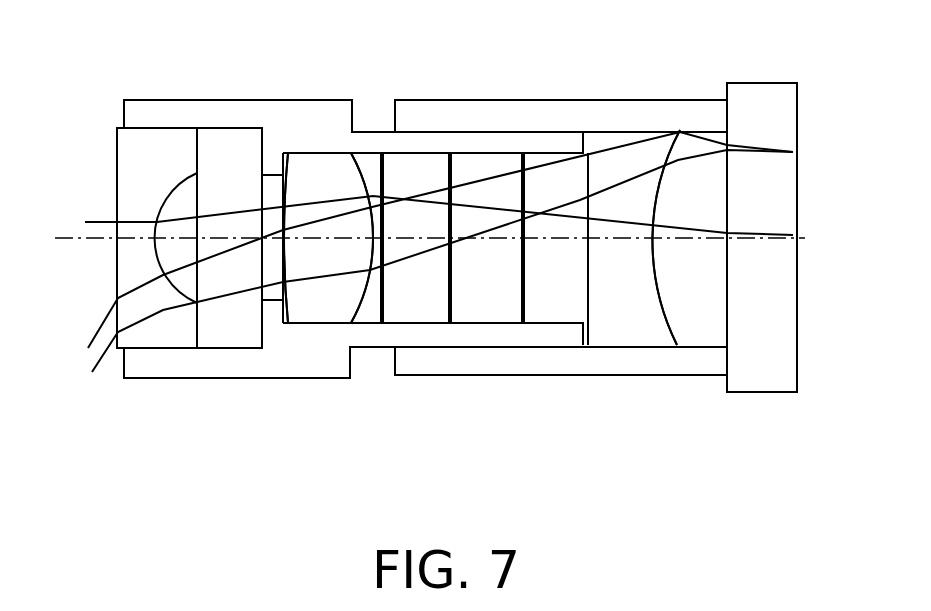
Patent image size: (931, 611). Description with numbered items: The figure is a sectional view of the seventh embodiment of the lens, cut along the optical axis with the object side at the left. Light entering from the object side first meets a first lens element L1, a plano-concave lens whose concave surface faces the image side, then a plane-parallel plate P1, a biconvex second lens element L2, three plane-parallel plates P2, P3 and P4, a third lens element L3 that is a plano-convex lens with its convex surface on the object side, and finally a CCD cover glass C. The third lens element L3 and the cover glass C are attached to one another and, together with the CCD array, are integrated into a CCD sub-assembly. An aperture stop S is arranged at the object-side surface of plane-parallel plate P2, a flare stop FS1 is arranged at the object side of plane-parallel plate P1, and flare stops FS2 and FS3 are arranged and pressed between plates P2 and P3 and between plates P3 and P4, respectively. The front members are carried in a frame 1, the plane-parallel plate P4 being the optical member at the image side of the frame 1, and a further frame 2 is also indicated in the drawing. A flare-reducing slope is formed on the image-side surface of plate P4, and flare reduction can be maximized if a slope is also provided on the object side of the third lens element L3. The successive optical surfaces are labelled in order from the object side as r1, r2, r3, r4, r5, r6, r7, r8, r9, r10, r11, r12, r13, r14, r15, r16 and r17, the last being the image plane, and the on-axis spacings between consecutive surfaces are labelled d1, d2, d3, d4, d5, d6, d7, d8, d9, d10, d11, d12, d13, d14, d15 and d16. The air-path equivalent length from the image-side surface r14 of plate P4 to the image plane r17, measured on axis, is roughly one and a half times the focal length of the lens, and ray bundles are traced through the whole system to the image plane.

The frame 1 is at (275, 363).
The second lens holder 2 is at (653, 362).
The first lens element L1 is at (140, 337).
The second lens element L2 is at (335, 313).
The third lens element L3 is at (703, 330).
The plane-parallel plate P1 is at (223, 337).
The plane-parallel plate P2 is at (427, 313).
The plane-parallel plate P3 is at (492, 315).
The plane-parallel plate P4 is at (562, 313).
The aperture stop S is at (380, 320).
The flare stop FS1 is at (192, 312).
The flare stop FS2 is at (447, 312).
The flare stop FS3 is at (530, 310).
The CCD cover glass C is at (772, 378).
The first refractive surface r1 is at (117, 152).
The second refractive surface r2 is at (168, 192).
The third refractive surface r3 is at (196, 155).
The fourth refractive surface r4 is at (198, 190).
The fifth refractive surface r5 is at (260, 147).
The sixth refractive surface r6 is at (283, 186).
The seventh refractive surface r7 is at (354, 157).
The eighth surface (stop plane) r8 is at (378, 205).
The ninth surface r9 is at (387, 192).
The tenth surface r10 is at (448, 163).
The eleventh surface r11 is at (455, 203).
The twelfth surface r12 is at (525, 164).
The thirteenth surface r13 is at (528, 175).
The surface r14 is at (590, 166).
The fifteenth refractive surface r15 is at (668, 144).
The sixteenth surface (cover glass front) r16 is at (727, 138).
The surface r17 is at (797, 118).
The axial distance d1 is at (130, 238).
The axial distance d2 is at (170, 310).
The axial distance d3 is at (198, 217).
The axial distance d4 is at (222, 242).
The axial distance d5 is at (285, 220).
The axial distance d6 is at (311, 240).
The axial distance d7 is at (372, 310).
The axial distance d8 is at (383, 240).
The axial distance d9 is at (420, 236).
The axial distance d10 is at (450, 247).
The axial distance d11 is at (502, 233).
The axial distance d12 is at (523, 247).
The axial distance d13 is at (588, 162).
The axial distance d14 is at (622, 240).
The axial distance d15 is at (695, 240).
The axial distance d16 is at (767, 240).